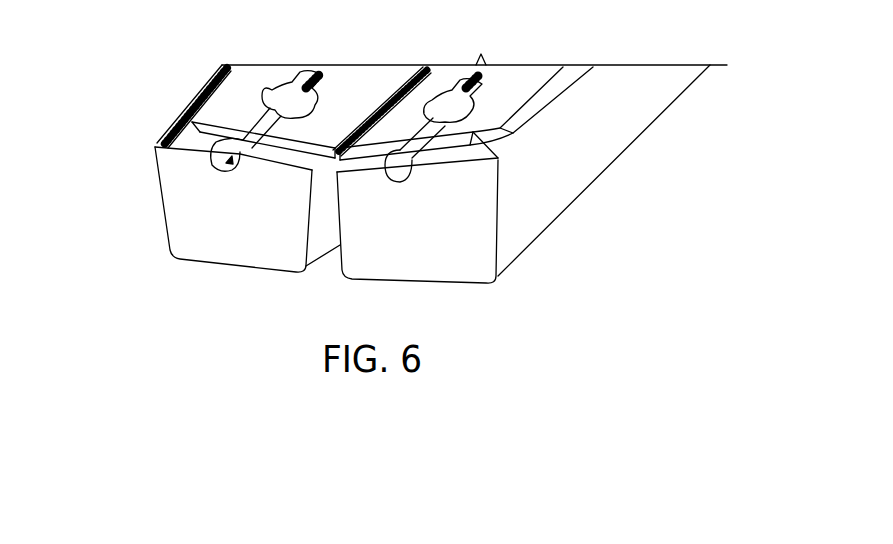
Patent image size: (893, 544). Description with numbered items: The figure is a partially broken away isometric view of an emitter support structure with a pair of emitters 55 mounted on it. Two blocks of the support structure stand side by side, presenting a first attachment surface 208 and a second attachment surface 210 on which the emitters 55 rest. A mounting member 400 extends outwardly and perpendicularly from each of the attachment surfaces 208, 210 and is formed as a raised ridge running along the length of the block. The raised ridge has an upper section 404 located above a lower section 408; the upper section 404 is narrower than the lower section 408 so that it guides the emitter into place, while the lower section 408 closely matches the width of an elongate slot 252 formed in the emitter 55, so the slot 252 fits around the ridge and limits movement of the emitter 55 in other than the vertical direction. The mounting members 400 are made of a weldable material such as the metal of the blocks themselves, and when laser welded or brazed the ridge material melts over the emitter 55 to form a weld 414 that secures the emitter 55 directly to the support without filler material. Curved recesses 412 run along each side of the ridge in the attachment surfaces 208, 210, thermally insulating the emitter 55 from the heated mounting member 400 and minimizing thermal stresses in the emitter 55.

The emitter 55 is at (207, 86).
The first attachment surface 208 is at (212, 162).
The second attachment surface 210 is at (500, 157).
The elongate slot 252 is at (193, 103).
The mounting member 400 is at (215, 173).
The upper section 404 is at (194, 121).
The lower section 408 is at (214, 152).
The recess 412 is at (425, 178).
The weld 414 is at (272, 80).